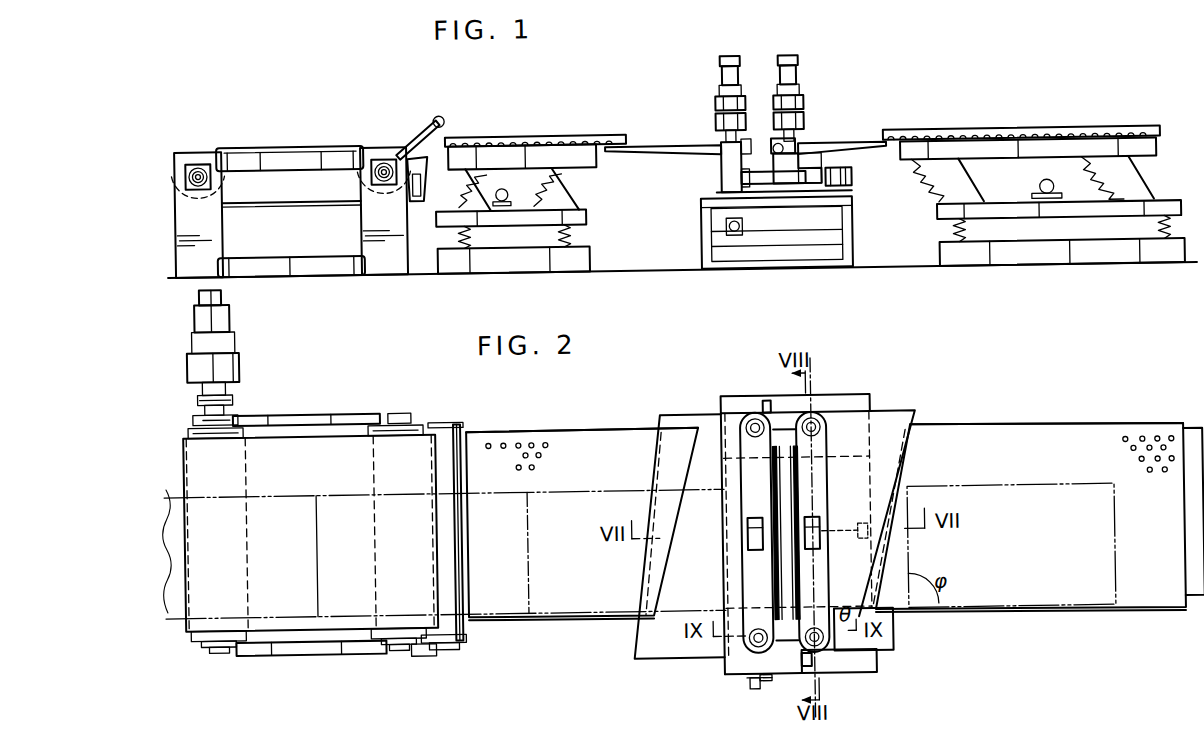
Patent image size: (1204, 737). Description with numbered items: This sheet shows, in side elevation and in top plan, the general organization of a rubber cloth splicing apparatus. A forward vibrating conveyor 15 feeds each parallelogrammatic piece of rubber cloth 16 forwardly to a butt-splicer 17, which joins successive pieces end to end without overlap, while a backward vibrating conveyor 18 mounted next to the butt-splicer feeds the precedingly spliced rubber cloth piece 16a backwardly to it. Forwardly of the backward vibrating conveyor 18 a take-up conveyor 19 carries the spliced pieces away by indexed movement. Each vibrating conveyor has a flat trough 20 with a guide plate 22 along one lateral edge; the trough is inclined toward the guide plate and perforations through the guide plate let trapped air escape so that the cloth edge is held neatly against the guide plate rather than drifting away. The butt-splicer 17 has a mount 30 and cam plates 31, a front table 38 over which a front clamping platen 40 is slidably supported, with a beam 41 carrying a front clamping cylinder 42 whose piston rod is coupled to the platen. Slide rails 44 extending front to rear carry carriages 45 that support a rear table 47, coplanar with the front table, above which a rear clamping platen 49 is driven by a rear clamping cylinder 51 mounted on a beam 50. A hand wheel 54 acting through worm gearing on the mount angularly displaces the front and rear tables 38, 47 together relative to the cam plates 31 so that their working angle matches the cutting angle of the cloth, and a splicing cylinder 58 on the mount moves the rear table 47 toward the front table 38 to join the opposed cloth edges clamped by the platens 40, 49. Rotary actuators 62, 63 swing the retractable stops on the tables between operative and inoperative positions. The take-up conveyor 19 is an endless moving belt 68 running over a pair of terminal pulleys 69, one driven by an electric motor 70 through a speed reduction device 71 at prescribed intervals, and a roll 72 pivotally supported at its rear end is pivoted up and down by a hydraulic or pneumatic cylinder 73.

In FIG. 1, the forward vibrating conveyor 15 is at (1042, 106).
In FIG. 2, the forward vibrating conveyor 15 is at (1118, 411).
In FIG. 2, the rubber cloth piece 16 is at (1027, 490).
In FIG. 2, the precedingly spliced rubber cloth piece 16a is at (589, 520).
In FIG. 1, the butt-splicer 17 is at (766, 48).
In FIG. 2, the butt-splicer 17 is at (766, 387).
In FIG. 1, the backward vibrating conveyor 18 is at (541, 115).
In FIG. 2, the backward vibrating conveyor 18 is at (520, 425).
In FIG. 1, the take-up conveyor 19 is at (247, 121).
In FIG. 2, the take-up conveyor 19 is at (361, 401).
In FIG. 2, the trough 20 is at (595, 428).
In FIG. 2, the guide plate 22 is at (548, 619).
In FIG. 1, the mount 30 is at (702, 239).
In FIG. 2, the mount 30 is at (727, 571).
In FIG. 2, the cam plates 31 is at (872, 673).
In FIG. 1, the front table 38 is at (692, 153).
In FIG. 2, the front table 38 is at (645, 645).
In FIG. 1, the front clamping platen 40 is at (718, 121).
In FIG. 1, the beam 41 is at (718, 99).
In FIG. 2, the beam 41 is at (745, 450).
In FIG. 1, the front clamping cylinder 42 is at (729, 57).
In FIG. 2, the front clamping cylinder 42 is at (748, 533).
In FIG. 1, the slide rails 44 is at (766, 181).
In FIG. 2, the slide rails 44 is at (782, 433).
In FIG. 1, the carriages 45 is at (815, 181).
In FIG. 1, the rear table 47 is at (855, 152).
In FIG. 2, the rear table 47 is at (894, 648).
In FIG. 1, the rear clamping platen 49 is at (808, 121).
In FIG. 1, the beam 50 is at (806, 99).
In FIG. 2, the beam 50 is at (822, 441).
In FIG. 1, the rear clamping cylinder 51 is at (797, 57).
In FIG. 2, the rear clamping cylinder 51 is at (821, 533).
In FIG. 2, the hand wheel 54 is at (752, 689).
In FIG. 1, the splicing cylinder 58 is at (852, 185).
In FIG. 2, the rotary actuator 62 is at (765, 405).
In FIG. 2, the rotary actuator 63 is at (801, 669).
In FIG. 1, the endless moving belt 68 is at (295, 141).
In FIG. 2, the endless moving belt 68 is at (283, 445).
In FIG. 1, the terminal pulleys 69 is at (197, 143).
In FIG. 2, the terminal pulleys 69 is at (195, 630).
In FIG. 2, the electric motor 70 is at (203, 313).
In FIG. 2, the speed reduction device 71 is at (198, 363).
In FIG. 1, the roll 72 is at (437, 113).
In FIG. 2, the roll 72 is at (463, 473).
In FIG. 1, the cylinder 73 is at (426, 182).